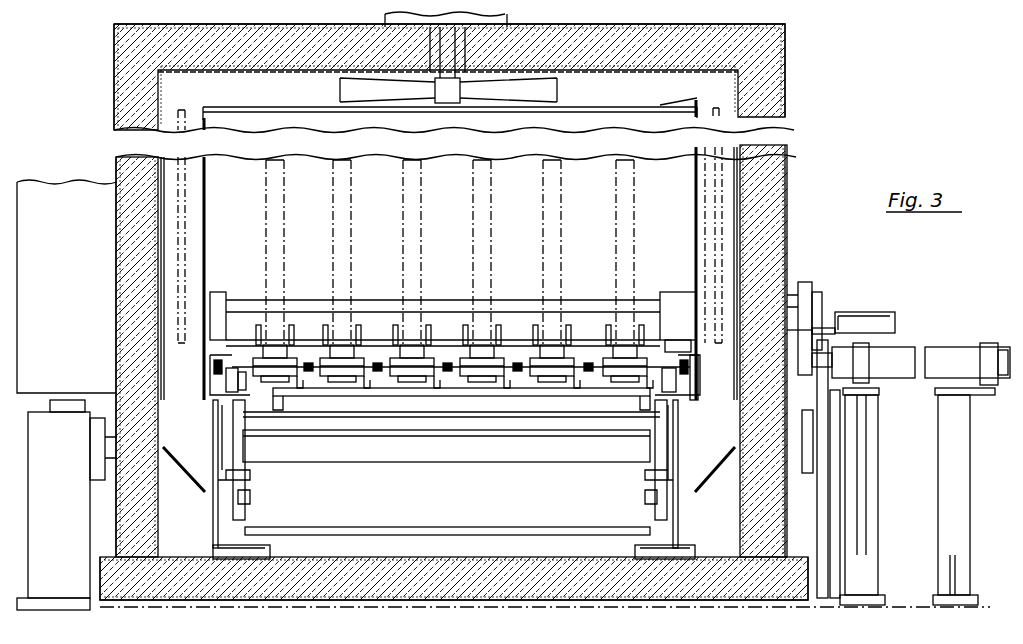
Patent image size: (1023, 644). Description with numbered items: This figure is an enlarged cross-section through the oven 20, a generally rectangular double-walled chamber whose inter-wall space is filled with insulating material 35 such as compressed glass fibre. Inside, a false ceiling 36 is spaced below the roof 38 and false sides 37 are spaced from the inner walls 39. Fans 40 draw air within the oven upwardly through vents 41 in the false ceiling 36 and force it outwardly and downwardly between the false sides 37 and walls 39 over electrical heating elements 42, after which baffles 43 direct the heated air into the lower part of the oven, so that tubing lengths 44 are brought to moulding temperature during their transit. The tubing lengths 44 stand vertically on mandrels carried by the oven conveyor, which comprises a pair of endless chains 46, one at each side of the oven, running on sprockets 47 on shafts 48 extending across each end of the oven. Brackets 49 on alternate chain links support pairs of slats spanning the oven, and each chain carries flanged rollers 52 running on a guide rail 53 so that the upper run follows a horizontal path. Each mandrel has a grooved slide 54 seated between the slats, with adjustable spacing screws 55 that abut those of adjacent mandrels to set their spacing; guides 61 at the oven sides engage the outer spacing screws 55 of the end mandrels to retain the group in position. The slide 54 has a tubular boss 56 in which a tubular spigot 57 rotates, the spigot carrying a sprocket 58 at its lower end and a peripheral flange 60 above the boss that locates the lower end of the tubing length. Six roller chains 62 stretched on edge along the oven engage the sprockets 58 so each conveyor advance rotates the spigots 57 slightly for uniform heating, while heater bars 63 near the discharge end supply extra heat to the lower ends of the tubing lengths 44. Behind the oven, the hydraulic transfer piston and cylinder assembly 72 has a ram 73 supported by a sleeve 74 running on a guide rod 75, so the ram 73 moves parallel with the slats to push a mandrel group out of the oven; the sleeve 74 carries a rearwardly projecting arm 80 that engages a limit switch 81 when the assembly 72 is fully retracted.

The oven 20 is at (793, 167).
The insulating material 35 is at (784, 28).
The false ceiling 36 is at (745, 92).
The false sides 37 is at (160, 182).
The roof 38 is at (781, 57).
The inner walls 39 is at (160, 208).
The fans 40 is at (558, 90).
The vents 41 is at (345, 108).
The electrical heating elements 42 is at (755, 138).
The baffles 43 is at (190, 482).
The tubing lengths 44 is at (338, 215).
The endless chains 46 is at (252, 392).
The sprockets 47 is at (245, 490).
The shafts 48 is at (478, 445).
The brackets 49 is at (225, 378).
The flanged roller 52 is at (232, 390).
The guide rail 53 is at (218, 405).
The slide 54 is at (408, 378).
The spacing screws 55 is at (395, 380).
The tubular boss 56 is at (420, 345).
The tubular spigot 57 is at (432, 378).
The sprocket 58 is at (418, 380).
The peripheral flange 60 is at (392, 338).
The guides 61 is at (238, 338).
The roller chains 62 is at (462, 378).
The heater bars 63 is at (330, 325).
The hydraulic mandrel transfer piston and cylinder assembly 72 is at (943, 362).
The ram 73 is at (806, 368).
The sleeve 74 is at (788, 262).
The guide rod 75 is at (645, 300).
The rearwardly projecting arm 80 is at (828, 323).
The limit switch 81 is at (858, 320).